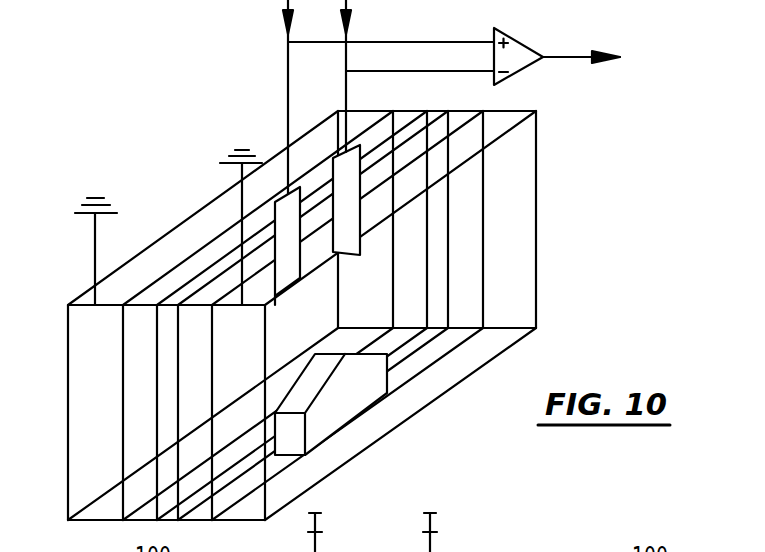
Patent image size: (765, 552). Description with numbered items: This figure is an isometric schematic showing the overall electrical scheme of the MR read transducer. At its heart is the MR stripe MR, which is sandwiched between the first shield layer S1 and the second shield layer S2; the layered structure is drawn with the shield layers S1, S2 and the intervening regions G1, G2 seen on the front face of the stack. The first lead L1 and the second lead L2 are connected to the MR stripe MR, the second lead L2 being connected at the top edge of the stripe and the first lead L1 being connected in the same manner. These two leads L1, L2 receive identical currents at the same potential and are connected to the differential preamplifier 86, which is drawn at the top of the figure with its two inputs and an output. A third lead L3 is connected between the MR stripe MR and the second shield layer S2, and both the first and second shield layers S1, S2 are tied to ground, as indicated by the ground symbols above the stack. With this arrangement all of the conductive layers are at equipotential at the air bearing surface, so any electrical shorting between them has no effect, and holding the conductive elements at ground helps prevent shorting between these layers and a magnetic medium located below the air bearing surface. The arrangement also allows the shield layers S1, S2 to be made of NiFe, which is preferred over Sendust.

The MR stripe MR is at (190, 288).
The first shield layer S1 is at (103, 412).
The first gap G1 is at (142, 412).
The second gap G2 is at (195, 412).
The second shield layer S2 is at (241, 254).
The first lead L1 is at (287, 192).
The second lead L2 is at (340, 148).
The third lead L3 is at (337, 402).
The differential preamplifier 86 is at (512, 75).